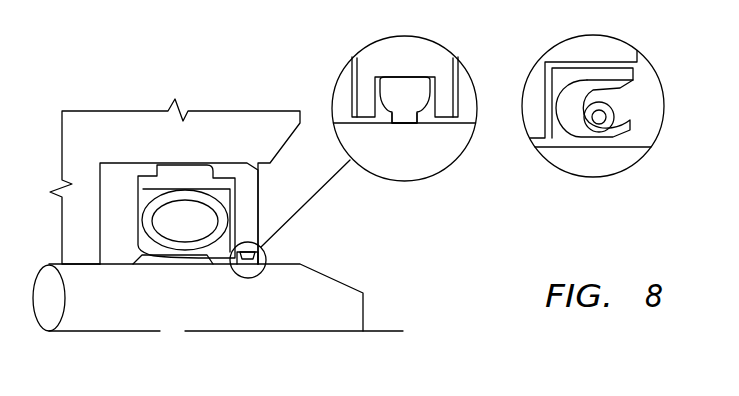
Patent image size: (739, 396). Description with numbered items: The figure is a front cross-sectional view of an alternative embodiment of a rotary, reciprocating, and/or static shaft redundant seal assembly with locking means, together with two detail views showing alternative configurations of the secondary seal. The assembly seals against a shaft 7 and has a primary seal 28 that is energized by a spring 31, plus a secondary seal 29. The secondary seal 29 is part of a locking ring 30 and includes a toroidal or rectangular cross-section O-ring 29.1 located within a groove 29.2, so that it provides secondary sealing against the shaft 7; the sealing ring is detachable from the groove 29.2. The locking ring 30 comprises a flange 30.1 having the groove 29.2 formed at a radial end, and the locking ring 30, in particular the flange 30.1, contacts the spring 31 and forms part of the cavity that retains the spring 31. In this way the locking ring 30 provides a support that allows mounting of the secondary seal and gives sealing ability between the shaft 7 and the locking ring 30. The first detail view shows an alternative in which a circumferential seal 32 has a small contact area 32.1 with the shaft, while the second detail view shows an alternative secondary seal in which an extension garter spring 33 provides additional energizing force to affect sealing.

In FIG. 8, the shaft 7 is at (83, 318).
In FIG. 8, the primary seal 28 is at (160, 266).
In FIG. 8, the secondary seal 29 is at (279, 303).
In FIG. 8, the O-ring 29.1 is at (248, 266).
In FIG. 8, the groove 29.2 is at (255, 268).
In FIG. 8, the locking ring 30 is at (267, 202).
In FIG. 8, the flange 30.1 is at (243, 193).
In FIG. 8, the spring 31 is at (152, 192).
In FIG. 8A, the circumferential seal 32 is at (441, 88).
In FIG. 8A, the contact area 32.1 is at (405, 124).
In FIG. 8B, the extension garter spring 33 is at (619, 107).